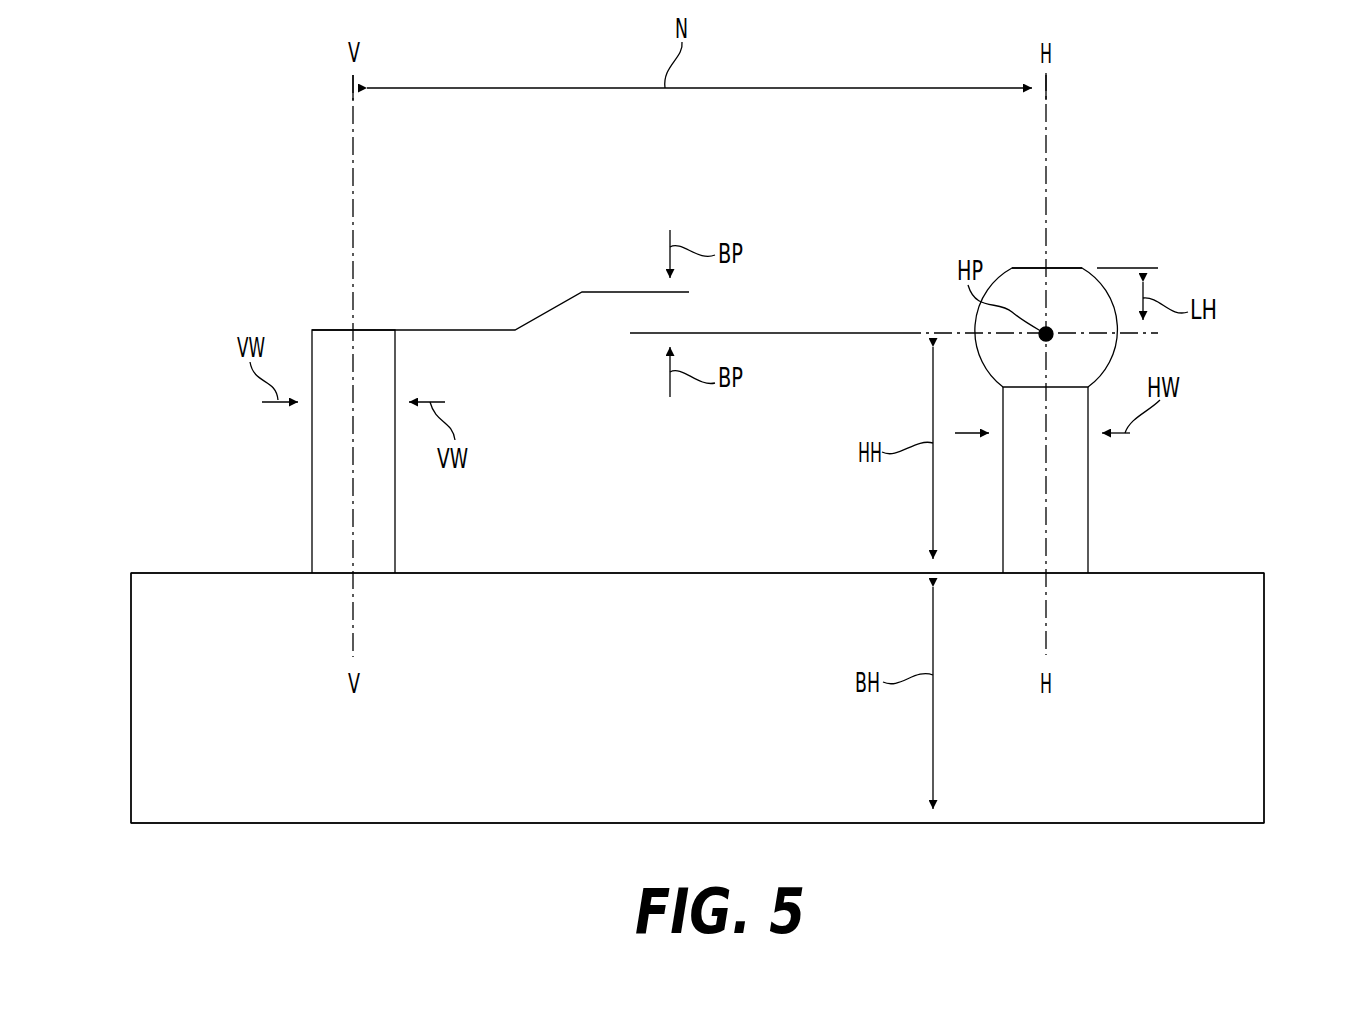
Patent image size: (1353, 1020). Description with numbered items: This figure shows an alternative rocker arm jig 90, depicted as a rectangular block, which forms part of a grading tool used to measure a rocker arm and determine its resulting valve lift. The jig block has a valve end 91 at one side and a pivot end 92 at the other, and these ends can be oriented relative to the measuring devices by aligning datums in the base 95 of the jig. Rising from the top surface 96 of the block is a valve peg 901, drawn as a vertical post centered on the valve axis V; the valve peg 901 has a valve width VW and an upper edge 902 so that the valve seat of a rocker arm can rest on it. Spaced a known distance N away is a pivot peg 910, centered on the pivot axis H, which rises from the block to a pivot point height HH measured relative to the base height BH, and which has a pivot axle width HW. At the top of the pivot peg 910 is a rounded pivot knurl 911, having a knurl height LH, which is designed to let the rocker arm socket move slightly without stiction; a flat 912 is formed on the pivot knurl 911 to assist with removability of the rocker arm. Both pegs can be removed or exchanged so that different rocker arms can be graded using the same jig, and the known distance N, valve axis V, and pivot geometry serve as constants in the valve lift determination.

The rocker arm jig 90 is at (1278, 627).
The valve end 91 is at (157, 573).
The pivot end 92 is at (1238, 573).
The base 95 is at (1235, 823).
The top surface of base 96 is at (838, 512).
The valve peg 901 is at (298, 547).
The upper edge 902 is at (304, 322).
The pivot peg 910 is at (1102, 545).
The pivot knurl 911 is at (1080, 295).
The flat 912 is at (1029, 268).